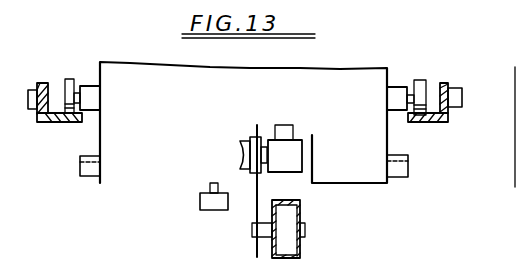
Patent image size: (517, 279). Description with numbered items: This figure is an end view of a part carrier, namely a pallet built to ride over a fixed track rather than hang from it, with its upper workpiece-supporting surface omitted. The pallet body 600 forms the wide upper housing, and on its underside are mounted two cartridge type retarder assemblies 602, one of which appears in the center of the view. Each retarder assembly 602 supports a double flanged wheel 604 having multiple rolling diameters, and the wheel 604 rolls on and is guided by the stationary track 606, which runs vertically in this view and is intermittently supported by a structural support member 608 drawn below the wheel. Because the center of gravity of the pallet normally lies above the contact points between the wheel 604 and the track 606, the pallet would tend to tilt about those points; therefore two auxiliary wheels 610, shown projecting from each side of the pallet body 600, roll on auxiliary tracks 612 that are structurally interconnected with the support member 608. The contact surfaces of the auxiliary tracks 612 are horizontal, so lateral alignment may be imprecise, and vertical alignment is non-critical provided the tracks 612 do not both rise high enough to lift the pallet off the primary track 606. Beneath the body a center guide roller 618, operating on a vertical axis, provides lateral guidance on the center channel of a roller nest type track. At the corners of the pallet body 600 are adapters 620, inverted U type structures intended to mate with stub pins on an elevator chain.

The pallet body 600 is at (122, 186).
The cartridge type retarder assembly 602 is at (302, 153).
The double flanged wheel 604 is at (252, 173).
The stationary track 606 is at (258, 243).
The structural support member 608 is at (300, 217).
The auxiliary wheel 610 is at (68, 78).
The auxiliary track 612 is at (50, 123).
The center guide roller 618 is at (210, 210).
The adapter 620 is at (80, 171).